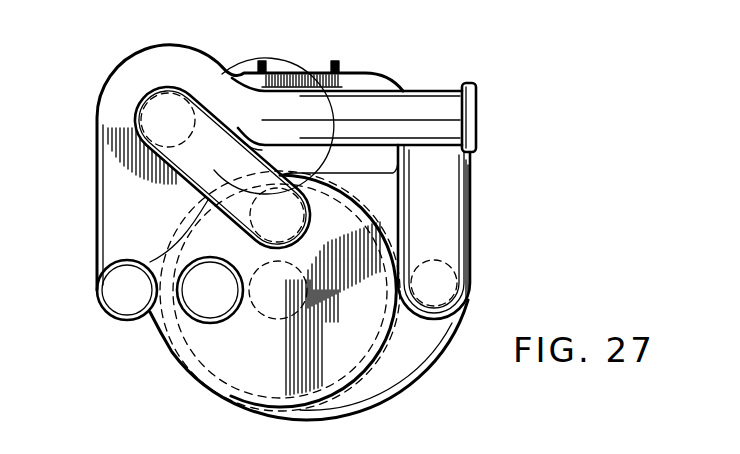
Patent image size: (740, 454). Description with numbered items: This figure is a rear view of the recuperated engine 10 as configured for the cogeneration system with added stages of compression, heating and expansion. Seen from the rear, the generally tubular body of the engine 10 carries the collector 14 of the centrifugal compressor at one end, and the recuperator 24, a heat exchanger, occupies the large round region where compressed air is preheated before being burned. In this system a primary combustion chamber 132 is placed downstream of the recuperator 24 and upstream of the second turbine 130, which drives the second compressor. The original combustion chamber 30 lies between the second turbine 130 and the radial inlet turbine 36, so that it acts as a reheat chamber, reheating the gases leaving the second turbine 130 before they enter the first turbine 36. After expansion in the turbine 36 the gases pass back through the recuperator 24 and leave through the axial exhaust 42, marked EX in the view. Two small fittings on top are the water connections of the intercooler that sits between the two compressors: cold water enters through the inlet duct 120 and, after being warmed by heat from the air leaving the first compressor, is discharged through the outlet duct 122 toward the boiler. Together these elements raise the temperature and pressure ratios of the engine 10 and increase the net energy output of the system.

The engine 10 is at (58, 231).
The collector 14 is at (195, 46).
The recuperator 24 is at (203, 387).
The combustion chamber 30 is at (311, 233).
The radial inlet turbine 36 is at (288, 316).
The axial exhaust 42 is at (209, 321).
The inlet duct 120 is at (264, 63).
The outlet duct 122 is at (341, 66).
The second turbine 130 is at (163, 98).
The primary combustion chamber 132 is at (430, 108).